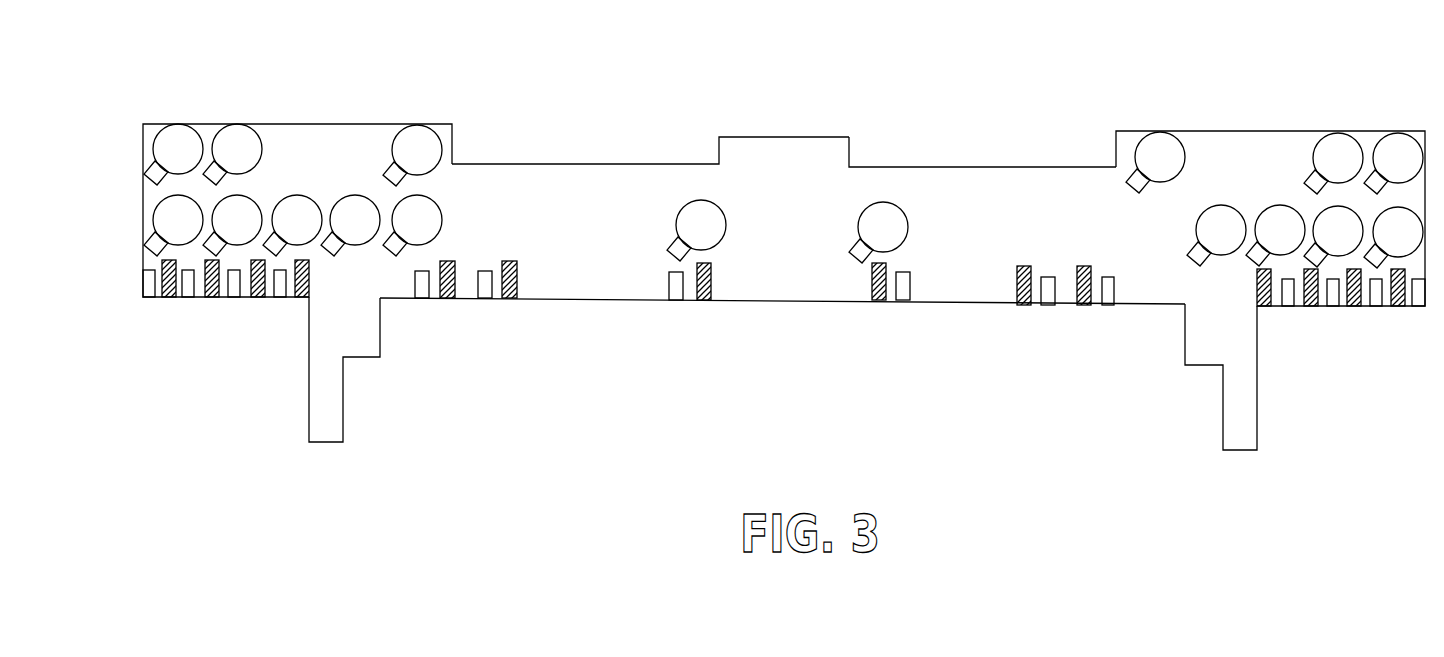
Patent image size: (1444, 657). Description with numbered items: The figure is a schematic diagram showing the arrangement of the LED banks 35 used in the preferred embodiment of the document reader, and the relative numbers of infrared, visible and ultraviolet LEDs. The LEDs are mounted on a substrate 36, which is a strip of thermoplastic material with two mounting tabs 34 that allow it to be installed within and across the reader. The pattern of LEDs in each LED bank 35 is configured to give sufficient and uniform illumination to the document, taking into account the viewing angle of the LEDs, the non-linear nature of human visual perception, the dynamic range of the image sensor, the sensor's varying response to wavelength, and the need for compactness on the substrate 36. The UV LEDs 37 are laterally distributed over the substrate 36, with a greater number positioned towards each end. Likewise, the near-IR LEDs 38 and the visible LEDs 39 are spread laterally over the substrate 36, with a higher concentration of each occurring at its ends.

The mounting tab 34 is at (343, 413).
The LED bank 35 is at (621, 155).
The substrate 36 is at (949, 185).
The UV LED 37 is at (178, 142).
The near-IR LED 38 is at (508, 298).
The visible LED 39 is at (676, 300).